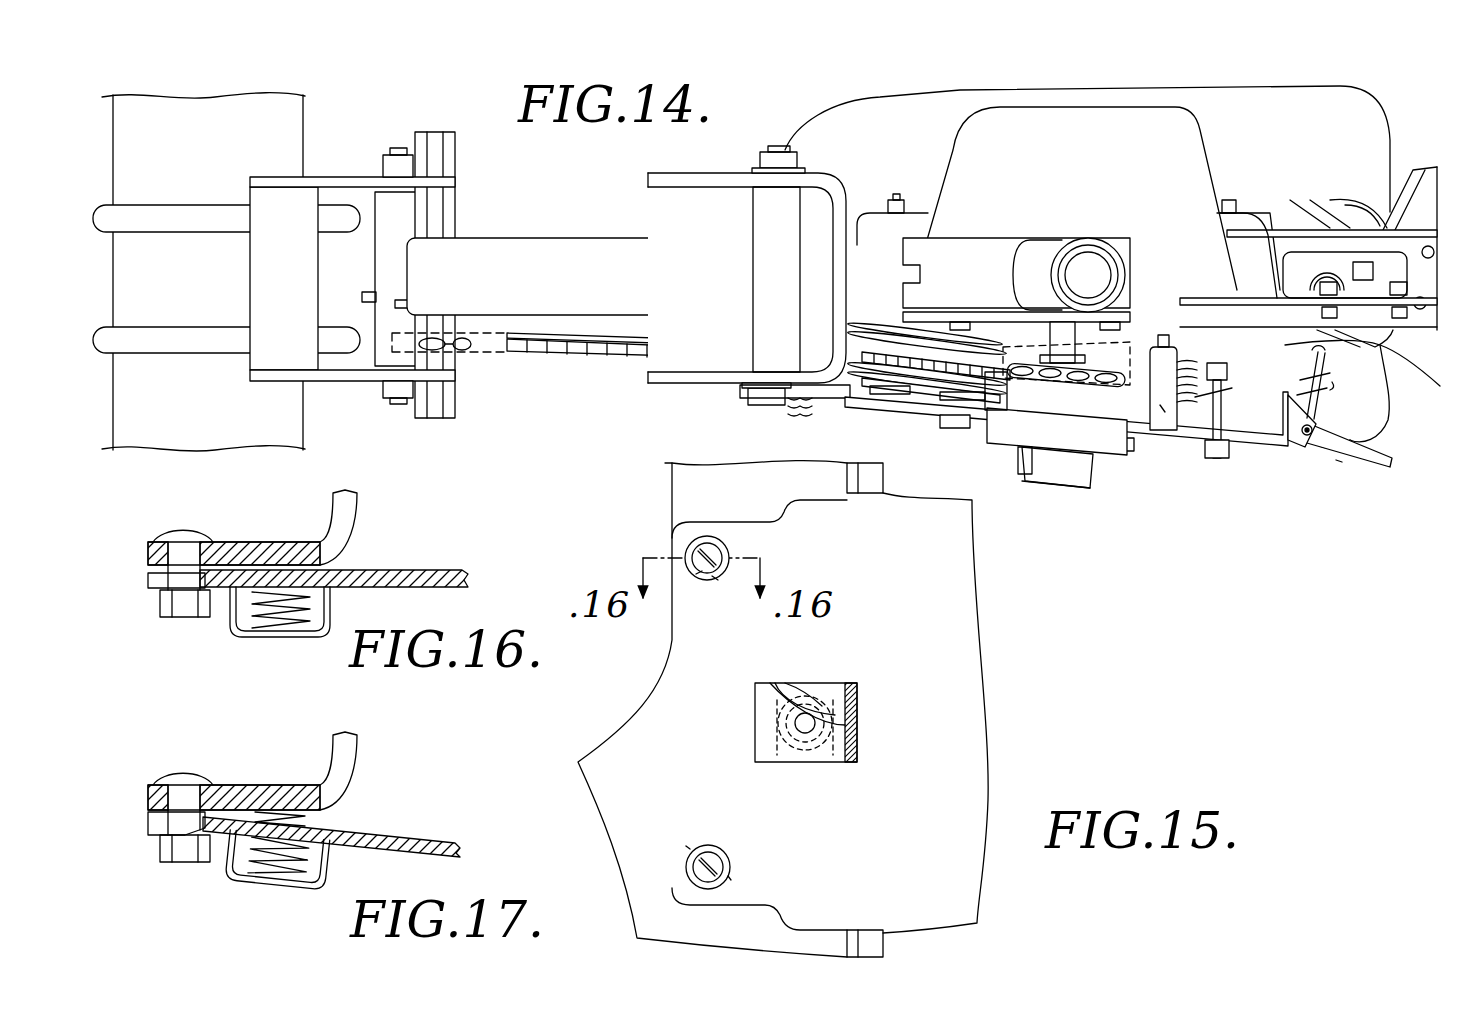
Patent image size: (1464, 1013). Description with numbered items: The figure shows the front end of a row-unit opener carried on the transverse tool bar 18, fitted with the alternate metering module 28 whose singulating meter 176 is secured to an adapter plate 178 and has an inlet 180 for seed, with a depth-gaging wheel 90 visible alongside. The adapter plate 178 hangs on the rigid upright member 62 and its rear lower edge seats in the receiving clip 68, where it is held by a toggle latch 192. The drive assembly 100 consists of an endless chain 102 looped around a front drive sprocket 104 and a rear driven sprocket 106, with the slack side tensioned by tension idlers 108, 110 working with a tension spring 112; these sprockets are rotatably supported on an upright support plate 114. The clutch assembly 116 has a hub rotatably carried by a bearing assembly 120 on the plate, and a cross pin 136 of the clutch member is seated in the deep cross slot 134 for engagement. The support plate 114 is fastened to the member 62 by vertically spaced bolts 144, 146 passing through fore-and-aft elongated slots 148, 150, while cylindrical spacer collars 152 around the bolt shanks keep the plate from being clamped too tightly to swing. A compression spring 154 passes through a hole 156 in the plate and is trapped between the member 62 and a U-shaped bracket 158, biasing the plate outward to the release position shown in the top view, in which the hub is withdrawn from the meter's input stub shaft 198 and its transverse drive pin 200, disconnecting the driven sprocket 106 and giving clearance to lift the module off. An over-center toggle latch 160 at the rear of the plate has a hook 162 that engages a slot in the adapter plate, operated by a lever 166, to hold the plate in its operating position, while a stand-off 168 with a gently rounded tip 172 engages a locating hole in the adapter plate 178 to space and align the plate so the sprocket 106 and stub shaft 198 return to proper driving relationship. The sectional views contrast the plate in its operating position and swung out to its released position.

In FIG. 14, the tool bar 18 is at (224, 117).
In FIG. 14, the metering module 28 is at (1207, 139).
In FIG. 14, the upright member 62 is at (847, 212).
In FIG. 15, the upright member 62 is at (688, 497).
In FIG. 16, the upright member 62 is at (272, 545).
In FIG. 17, the upright member 62 is at (282, 787).
In FIG. 14, the receiving clip 68 is at (1300, 273).
In FIG. 14, the depth-gaging wheels 90 is at (1370, 112).
In FIG. 14, the drive assembly 100 is at (857, 395).
In FIG. 14, the endless chain 102 is at (585, 345).
In FIG. 14, the front drive sprocket 104 is at (468, 348).
In FIG. 14, the driven sprocket 106 is at (1108, 466).
In FIG. 14, the tension idler 108 is at (955, 350).
In FIG. 14, the tension idler 110 is at (868, 340).
In FIG. 14, the tension spring 112 is at (1213, 396).
In FIG. 14, the support plate 114 is at (1265, 447).
In FIG. 15, the support plate 114 is at (975, 706).
In FIG. 16, the support plate 114 is at (400, 572).
In FIG. 17, the support plate 114 is at (425, 843).
In FIG. 14, the clutch assembly 116 is at (1095, 490).
In FIG. 14, the bearing assembly 120 is at (990, 410).
In FIG. 14, the cross slot 134 is at (1040, 462).
In FIG. 14, the cross pin 136 is at (1022, 455).
In FIG. 15, the bolt 144 is at (715, 580).
In FIG. 16, the bolt 144 is at (182, 528).
In FIG. 17, the bolt 144 is at (183, 755).
In FIG. 15, the bolt 146 is at (730, 878).
In FIG. 15, the slot 148 is at (700, 572).
In FIG. 16, the slot 148 is at (160, 602).
In FIG. 17, the slot 148 is at (160, 845).
In FIG. 15, the slot 150 is at (688, 845).
In FIG. 15, the spacer collar 152 is at (722, 548).
In FIG. 16, the spacer collar 152 is at (190, 583).
In FIG. 17, the spacer collar 152 is at (198, 828).
In FIG. 14, the compression spring 154 is at (782, 413).
In FIG. 15, the compression spring 154 is at (800, 697).
In FIG. 16, the compression spring 154 is at (295, 606).
In FIG. 17, the compression spring 154 is at (310, 880).
In FIG. 15, the hole 156 is at (822, 686).
In FIG. 15, the U-shaped bracket 158 is at (818, 760).
In FIG. 16, the U-shaped bracket 158 is at (258, 638).
In FIG. 17, the U-shaped bracket 158 is at (250, 880).
In FIG. 14, the over-center toggle latch 160 is at (1339, 470).
In FIG. 14, the hook 162 is at (1324, 352).
In FIG. 14, the lever 166 is at (1394, 462).
In FIG. 14, the stand-off 168 is at (1162, 410).
In FIG. 14, the rounded tips 172 is at (1170, 346).
In FIG. 14, the singulating meter 176 is at (950, 127).
In FIG. 14, the adapter plate 178 is at (1261, 288).
In FIG. 14, the inlet 180 is at (1057, 252).
In FIG. 14, the toggle latch 192 is at (1388, 251).
In FIG. 14, the input stub shaft 198 is at (1052, 325).
In FIG. 14, the drive pin 200 is at (1158, 330).